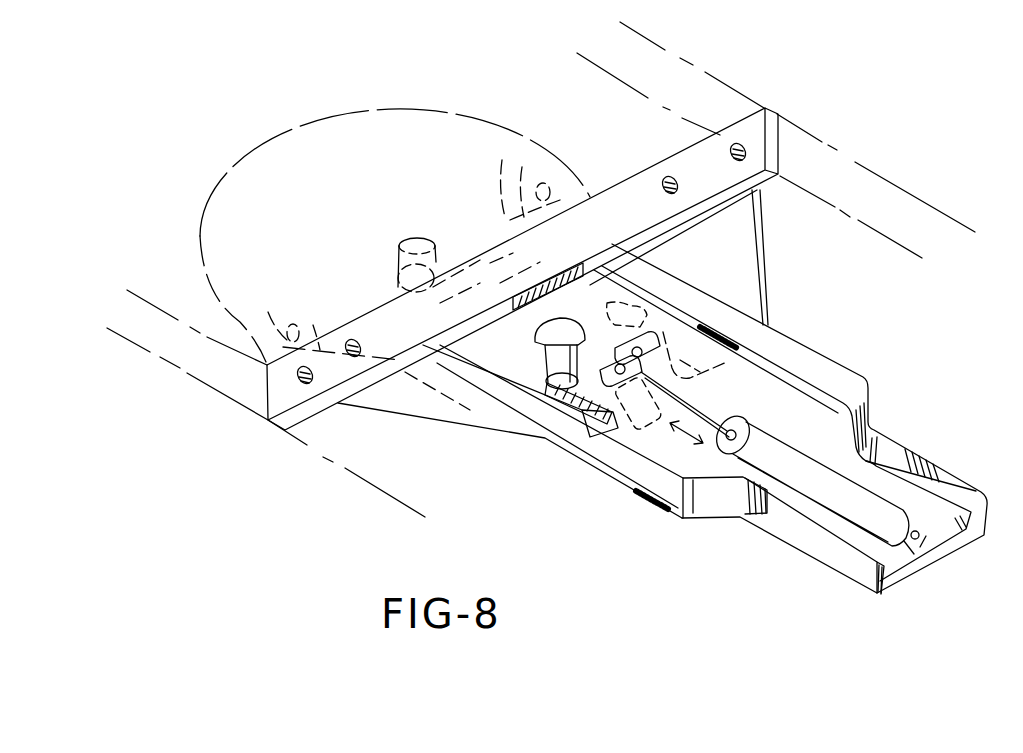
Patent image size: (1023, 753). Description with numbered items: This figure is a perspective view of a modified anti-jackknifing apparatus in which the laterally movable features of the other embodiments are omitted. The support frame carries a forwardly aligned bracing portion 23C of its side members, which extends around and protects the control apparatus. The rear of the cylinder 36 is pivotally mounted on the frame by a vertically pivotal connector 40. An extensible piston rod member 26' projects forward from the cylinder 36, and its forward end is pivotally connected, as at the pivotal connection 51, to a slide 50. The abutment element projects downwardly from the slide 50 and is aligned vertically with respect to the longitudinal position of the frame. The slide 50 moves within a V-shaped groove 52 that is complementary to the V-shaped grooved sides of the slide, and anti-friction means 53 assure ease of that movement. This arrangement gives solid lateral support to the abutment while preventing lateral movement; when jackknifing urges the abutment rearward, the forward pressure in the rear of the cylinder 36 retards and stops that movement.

The forwardly aligned bracing portion 23C is at (767, 260).
The extensible piston rod member 26' is at (734, 375).
The cylinder 36 is at (813, 503).
The vertically pivotal connector 40 is at (957, 553).
The slide 50 is at (517, 345).
The pivotal connection 51 is at (650, 358).
The V-shaped groove 52 is at (597, 410).
The anti-friction means 53 is at (642, 347).